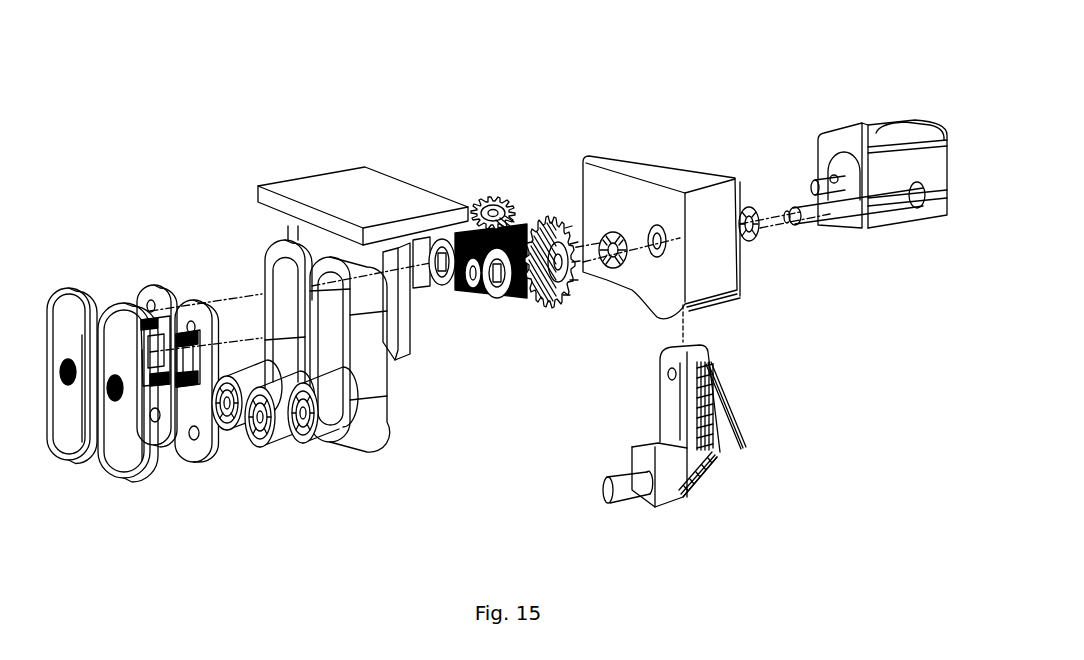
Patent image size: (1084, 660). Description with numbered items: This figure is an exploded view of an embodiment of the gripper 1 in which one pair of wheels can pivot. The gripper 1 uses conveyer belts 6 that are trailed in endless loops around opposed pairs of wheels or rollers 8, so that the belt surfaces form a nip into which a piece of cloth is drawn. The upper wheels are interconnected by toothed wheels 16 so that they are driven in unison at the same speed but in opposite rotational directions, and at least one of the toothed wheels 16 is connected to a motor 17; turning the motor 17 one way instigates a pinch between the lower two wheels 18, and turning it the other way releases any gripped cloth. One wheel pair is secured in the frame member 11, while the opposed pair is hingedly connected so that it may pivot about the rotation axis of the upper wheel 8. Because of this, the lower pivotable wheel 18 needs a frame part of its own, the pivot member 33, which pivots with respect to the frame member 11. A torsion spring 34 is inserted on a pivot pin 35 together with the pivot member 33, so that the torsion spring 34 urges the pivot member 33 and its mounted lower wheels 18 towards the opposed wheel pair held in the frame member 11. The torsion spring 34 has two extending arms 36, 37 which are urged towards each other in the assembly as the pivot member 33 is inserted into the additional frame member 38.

The gripper 1 is at (557, 81).
The conveyer belts 6 is at (258, 268).
The wheels or rollers 8 is at (447, 285).
The frame member 11 is at (382, 183).
The toothed wheels 16 is at (494, 198).
The motor 17 is at (881, 132).
The lower wheels 18 is at (217, 432).
The pivot member 33 is at (700, 477).
The torsion spring 34 is at (713, 388).
The pivot pin 35 is at (820, 210).
The extending arm 36 is at (703, 452).
The extending arm 37 is at (741, 442).
The additional frame member 38 is at (690, 186).